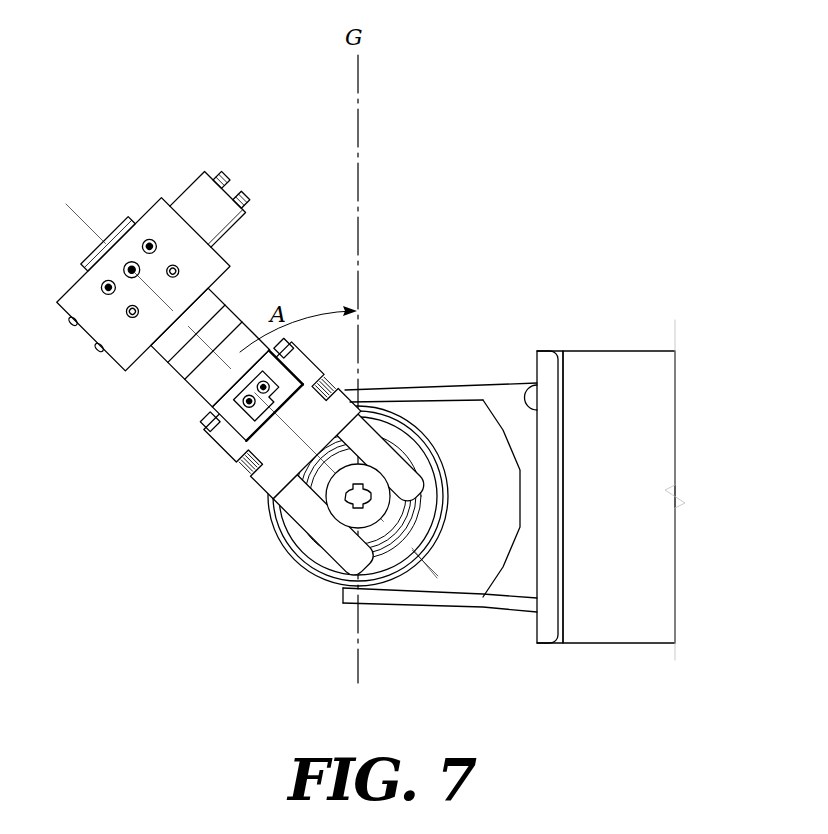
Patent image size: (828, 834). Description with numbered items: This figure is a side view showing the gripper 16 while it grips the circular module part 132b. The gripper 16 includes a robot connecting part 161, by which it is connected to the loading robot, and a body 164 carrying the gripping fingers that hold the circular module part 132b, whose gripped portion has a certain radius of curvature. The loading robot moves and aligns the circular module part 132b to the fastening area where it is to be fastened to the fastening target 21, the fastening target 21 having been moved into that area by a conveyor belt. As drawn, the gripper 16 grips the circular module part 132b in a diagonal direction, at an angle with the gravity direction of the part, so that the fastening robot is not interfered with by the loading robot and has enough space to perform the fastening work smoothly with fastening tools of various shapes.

The gripper 16 is at (285, 166).
The robot connecting part 161 is at (83, 328).
The body 164 is at (227, 363).
The circular module part 132b is at (425, 382).
The fastening target 21 is at (615, 337).